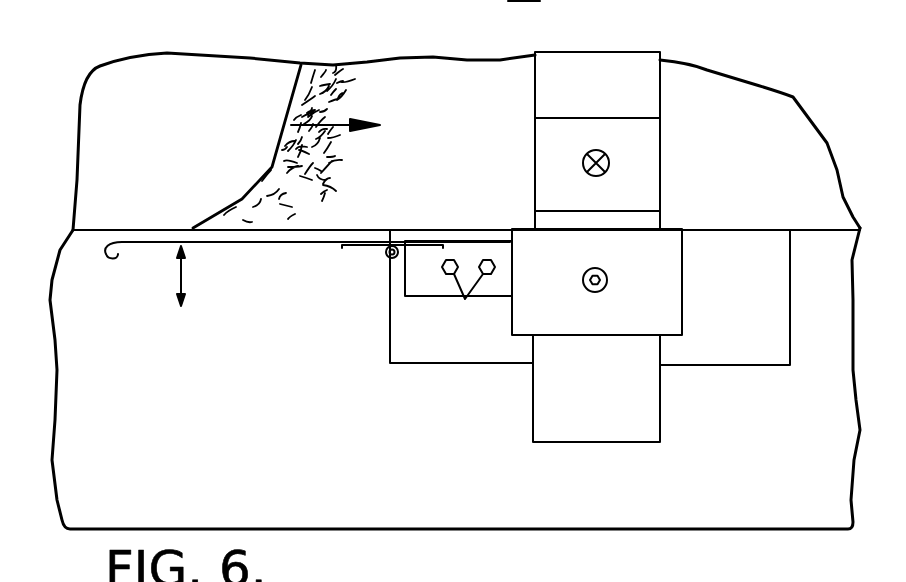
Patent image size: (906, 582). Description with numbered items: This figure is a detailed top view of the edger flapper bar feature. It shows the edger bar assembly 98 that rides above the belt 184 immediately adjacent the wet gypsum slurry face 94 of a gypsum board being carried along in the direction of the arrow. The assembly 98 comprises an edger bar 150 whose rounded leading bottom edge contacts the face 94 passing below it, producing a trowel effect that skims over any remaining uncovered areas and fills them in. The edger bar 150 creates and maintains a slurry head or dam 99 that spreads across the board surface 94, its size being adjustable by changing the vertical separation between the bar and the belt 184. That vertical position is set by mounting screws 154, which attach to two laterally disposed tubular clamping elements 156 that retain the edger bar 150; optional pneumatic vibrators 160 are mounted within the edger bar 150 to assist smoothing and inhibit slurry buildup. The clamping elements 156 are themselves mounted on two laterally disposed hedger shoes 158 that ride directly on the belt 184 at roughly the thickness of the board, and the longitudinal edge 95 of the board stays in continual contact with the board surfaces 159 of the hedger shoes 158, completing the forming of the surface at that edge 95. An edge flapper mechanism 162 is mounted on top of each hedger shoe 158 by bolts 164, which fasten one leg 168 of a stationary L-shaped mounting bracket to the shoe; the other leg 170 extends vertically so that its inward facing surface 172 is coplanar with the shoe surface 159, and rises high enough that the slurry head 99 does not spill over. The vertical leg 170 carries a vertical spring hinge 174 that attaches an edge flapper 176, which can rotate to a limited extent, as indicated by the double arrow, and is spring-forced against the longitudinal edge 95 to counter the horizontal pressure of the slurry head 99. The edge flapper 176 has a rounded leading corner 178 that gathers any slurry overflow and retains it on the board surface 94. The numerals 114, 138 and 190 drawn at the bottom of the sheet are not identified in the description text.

The gypsum board face 94 is at (466, 316).
The longitudinal edge of the gypsum board 95 is at (70, 230).
The edger bar assembly 98 is at (666, 394).
The slurry dam / slurry head 99 is at (285, 166).
The mounting member 114 is at (510, 563).
The frame member 138 is at (626, 566).
The edger bar 150 is at (648, 62).
The mounting screws 154 is at (598, 291).
The tubular clamping elements 156 is at (527, 238).
The hedger shoes 158 is at (427, 362).
The board surface of hedger shoe 159 is at (702, 230).
The pneumatic vibrators 160 is at (613, 165).
The edge flapper mechanism 162 is at (315, 252).
The bolts 164 is at (462, 302).
The horizontally extending leg of mounting bracket 168 is at (410, 290).
The vertically extending leg of mounting bracket 170 is at (407, 235).
The inward facing surface 172 is at (440, 232).
The vertical spring hinge 174 is at (387, 258).
The edge flapper 176 is at (212, 238).
The rounded leading corner 178 is at (108, 240).
The belt 184 is at (110, 517).
The assembly 190 is at (712, 572).